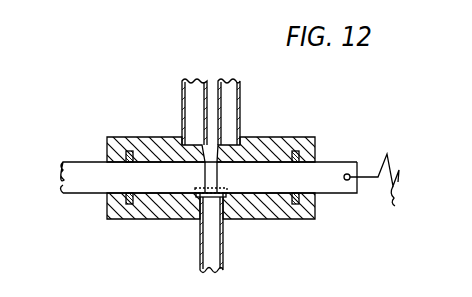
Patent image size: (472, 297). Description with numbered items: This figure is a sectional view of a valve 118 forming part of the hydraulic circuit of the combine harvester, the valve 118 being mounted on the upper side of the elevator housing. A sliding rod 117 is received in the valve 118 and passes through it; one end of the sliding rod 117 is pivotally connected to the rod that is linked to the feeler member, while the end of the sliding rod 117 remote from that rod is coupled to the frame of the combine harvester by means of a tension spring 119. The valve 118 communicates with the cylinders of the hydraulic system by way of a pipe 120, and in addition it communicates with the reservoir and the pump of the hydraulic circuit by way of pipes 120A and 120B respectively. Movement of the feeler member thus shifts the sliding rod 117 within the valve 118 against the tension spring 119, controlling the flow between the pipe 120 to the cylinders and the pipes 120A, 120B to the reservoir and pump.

The sliding rod 117 is at (77, 166).
The valve 118 is at (132, 220).
The tension spring 119 is at (394, 207).
The pipe 120 is at (223, 250).
The pipe 120A is at (240, 102).
The pipe 120B is at (185, 103).